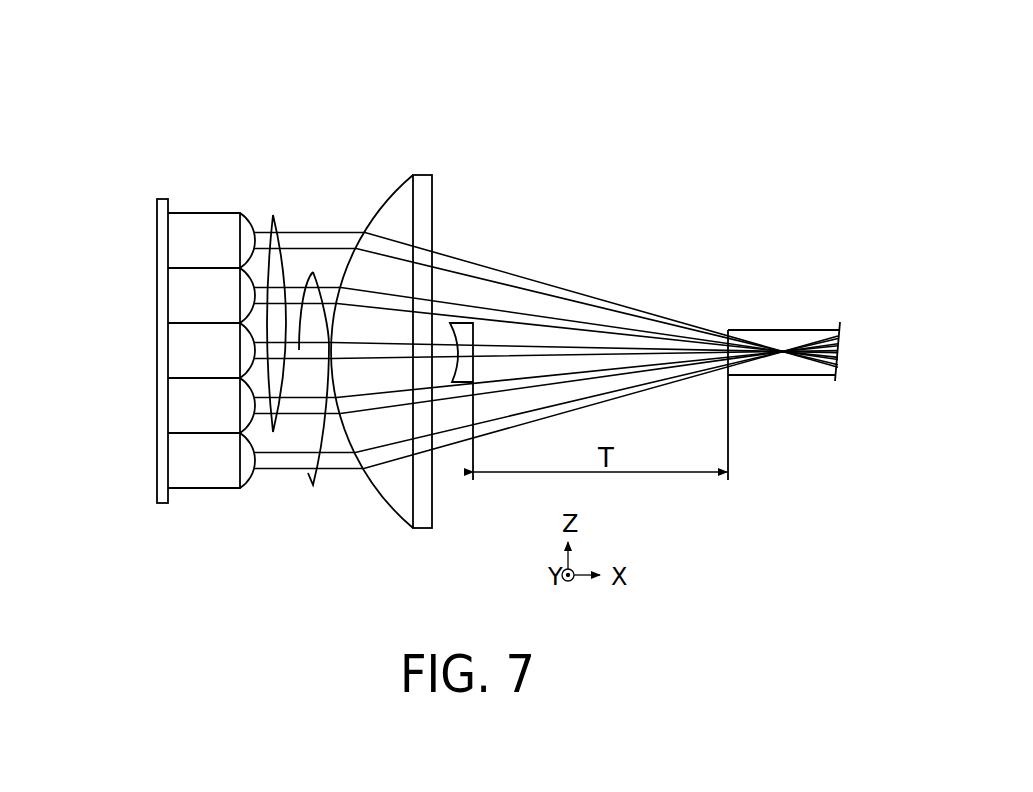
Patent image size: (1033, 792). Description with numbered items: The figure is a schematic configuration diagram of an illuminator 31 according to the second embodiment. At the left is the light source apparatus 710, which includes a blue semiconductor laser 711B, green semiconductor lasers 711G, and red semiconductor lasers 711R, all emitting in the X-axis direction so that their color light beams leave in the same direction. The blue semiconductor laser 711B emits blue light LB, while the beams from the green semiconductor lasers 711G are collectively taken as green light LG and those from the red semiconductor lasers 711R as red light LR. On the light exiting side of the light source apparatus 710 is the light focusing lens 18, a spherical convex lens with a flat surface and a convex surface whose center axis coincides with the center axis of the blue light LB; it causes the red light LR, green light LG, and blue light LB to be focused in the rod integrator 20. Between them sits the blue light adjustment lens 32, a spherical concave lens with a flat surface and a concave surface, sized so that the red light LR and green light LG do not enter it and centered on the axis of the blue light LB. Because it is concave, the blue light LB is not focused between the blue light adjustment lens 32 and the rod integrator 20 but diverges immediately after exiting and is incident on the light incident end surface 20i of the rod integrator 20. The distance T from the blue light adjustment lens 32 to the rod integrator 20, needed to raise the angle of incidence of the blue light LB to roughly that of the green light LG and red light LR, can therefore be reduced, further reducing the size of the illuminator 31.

The light source apparatus 710 is at (173, 176).
The green semiconductor laser 711G is at (185, 242).
The red semiconductor laser 711R is at (183, 298).
The blue semiconductor laser 711B is at (183, 353).
The green light LG is at (267, 228).
The red light LR is at (319, 280).
The blue light LB is at (302, 292).
The light focusing lens 18 is at (400, 210).
The illuminator 31 is at (527, 190).
The blue light adjustment lens 32 is at (465, 333).
The rod integrator 20 is at (780, 333).
The light incident end surface 20i is at (720, 332).